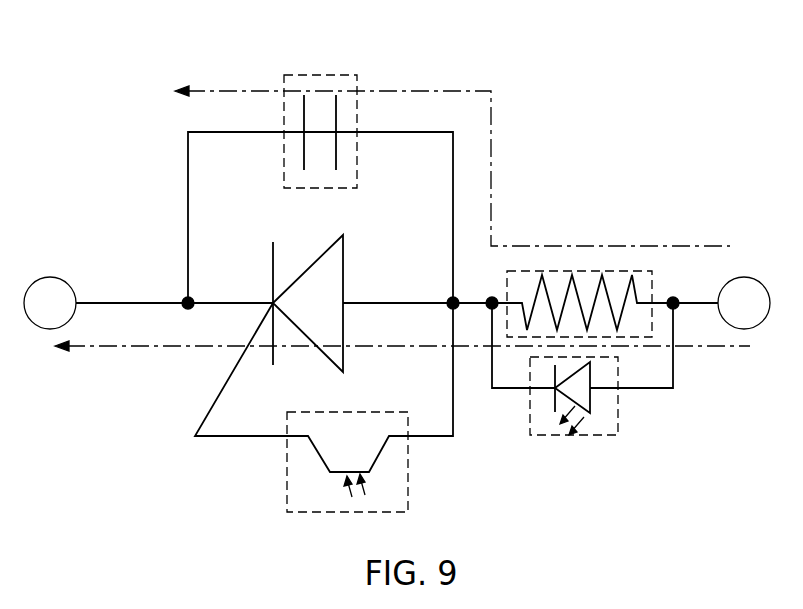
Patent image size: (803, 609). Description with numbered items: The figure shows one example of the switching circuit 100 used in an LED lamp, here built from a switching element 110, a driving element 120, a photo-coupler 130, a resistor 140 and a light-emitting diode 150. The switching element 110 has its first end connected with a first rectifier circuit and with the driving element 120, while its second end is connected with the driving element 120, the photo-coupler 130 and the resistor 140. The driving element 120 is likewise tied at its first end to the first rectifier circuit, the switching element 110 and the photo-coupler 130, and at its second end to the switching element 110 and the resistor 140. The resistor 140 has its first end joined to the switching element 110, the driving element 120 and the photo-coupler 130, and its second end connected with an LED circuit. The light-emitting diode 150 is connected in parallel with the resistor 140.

The switching circuit 100 is at (540, 140).
The switching element 110 is at (343, 240).
The driving element 120 is at (318, 74).
The photo-coupler 130 is at (408, 477).
The resistor 140 is at (652, 275).
The light-emitting diode 150 is at (580, 436).